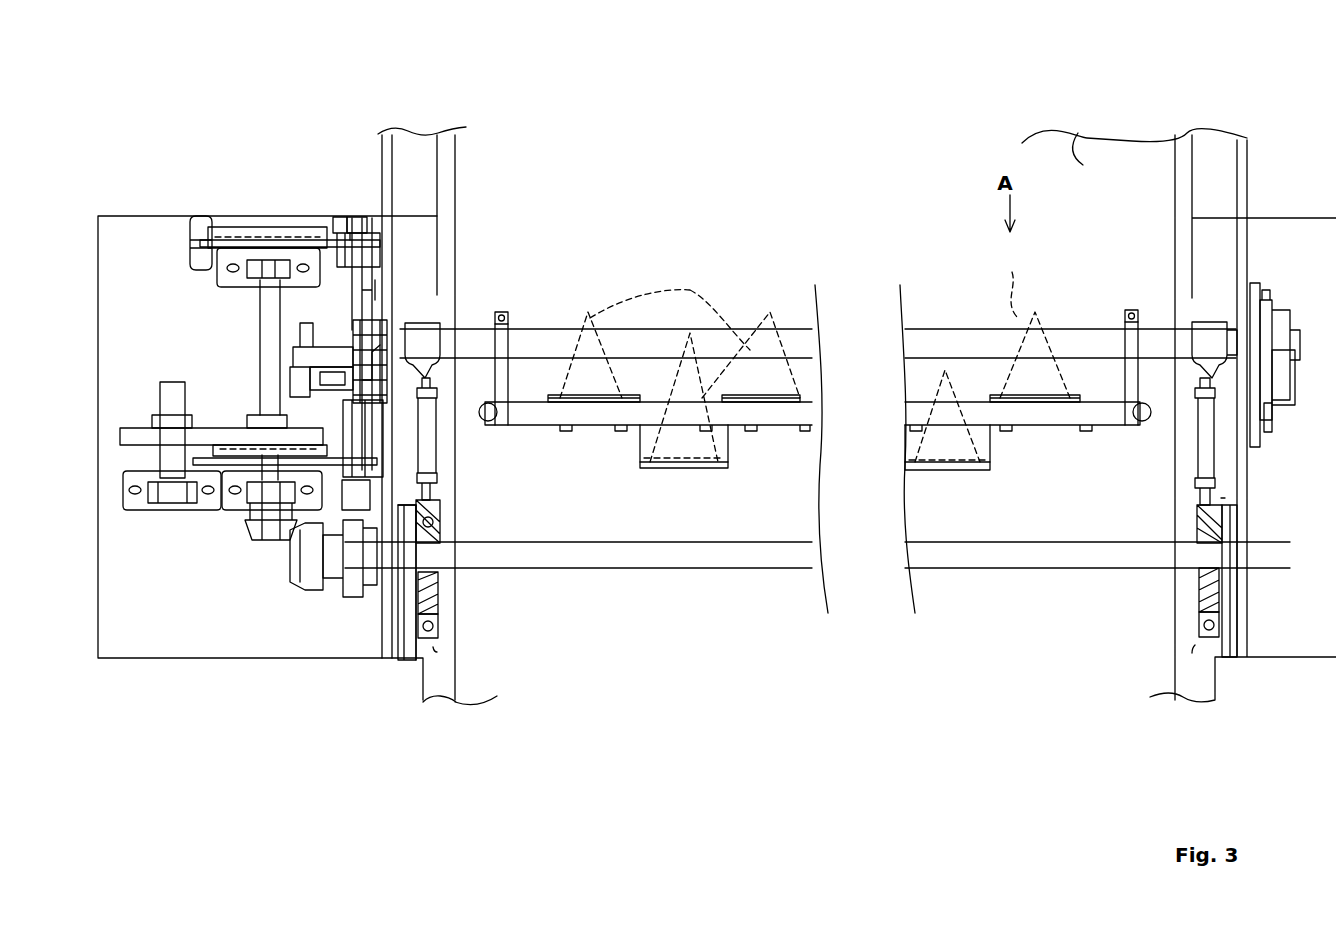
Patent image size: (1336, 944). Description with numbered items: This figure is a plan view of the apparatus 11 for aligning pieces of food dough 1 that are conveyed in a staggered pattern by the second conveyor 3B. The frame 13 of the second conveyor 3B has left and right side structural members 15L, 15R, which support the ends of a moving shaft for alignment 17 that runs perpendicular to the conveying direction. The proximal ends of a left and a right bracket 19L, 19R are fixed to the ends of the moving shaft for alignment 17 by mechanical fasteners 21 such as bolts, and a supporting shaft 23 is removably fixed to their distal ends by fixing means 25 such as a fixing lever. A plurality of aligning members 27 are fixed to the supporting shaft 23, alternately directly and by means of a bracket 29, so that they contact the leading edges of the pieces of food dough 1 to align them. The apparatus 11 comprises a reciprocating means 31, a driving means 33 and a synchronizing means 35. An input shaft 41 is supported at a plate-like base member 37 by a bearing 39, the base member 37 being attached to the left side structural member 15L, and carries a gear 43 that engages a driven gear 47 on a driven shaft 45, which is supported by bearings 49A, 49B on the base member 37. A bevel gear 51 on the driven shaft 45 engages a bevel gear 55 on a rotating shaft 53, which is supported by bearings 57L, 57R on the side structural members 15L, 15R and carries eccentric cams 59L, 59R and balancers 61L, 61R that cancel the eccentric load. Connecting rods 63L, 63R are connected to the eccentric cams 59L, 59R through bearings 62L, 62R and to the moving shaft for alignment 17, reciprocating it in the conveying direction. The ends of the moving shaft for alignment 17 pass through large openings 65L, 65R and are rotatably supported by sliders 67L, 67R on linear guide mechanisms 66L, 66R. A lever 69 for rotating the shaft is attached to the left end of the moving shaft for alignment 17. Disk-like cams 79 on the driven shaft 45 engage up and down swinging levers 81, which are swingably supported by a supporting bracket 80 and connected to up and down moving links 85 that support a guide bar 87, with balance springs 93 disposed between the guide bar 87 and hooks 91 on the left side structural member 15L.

The pieces of food dough 1 is at (690, 306).
The second conveyor 3B is at (1134, 132).
The apparatus for aligning the pieces of food dough 11 is at (756, 254).
The frame 13 is at (1258, 163).
The left side structural member 15L is at (382, 160).
The right side structural member 15R is at (1237, 187).
The moving shaft for alignment 17 is at (550, 328).
The left bracket 19L is at (512, 325).
The right bracket 19R is at (1128, 306).
The pin 21 is at (1123, 316).
The supporting shaft 23 is at (530, 425).
The fixing means 25 is at (1143, 421).
The aligning members 27 is at (674, 467).
The bracket 29 is at (1015, 465).
The reciprocating means 31 is at (342, 630).
The driving means 33 is at (350, 370).
The synchronizing means 35 is at (210, 560).
The base member 37 is at (201, 660).
The bearing 39 is at (143, 512).
The input shaft 41 is at (160, 405).
The gear 43 is at (120, 442).
The driven shaft 45 is at (260, 326).
The driven gear 47 is at (242, 427).
The bearing 49A is at (255, 512).
The bearing 49B is at (242, 282).
The bevel gear 51 is at (252, 542).
The rotating shaft 53 is at (668, 565).
The bevel gear 55 is at (295, 577).
The bearing 57L is at (385, 647).
The bearing 57R is at (1258, 625).
The eccentric cam 59L is at (438, 595).
The eccentric cam 59R is at (1193, 597).
The balancer 61L is at (440, 520).
The balancer 61R is at (1212, 535).
The bearing 62L is at (438, 630).
The bearing 62R is at (1193, 625).
The left connecting rod 63L is at (428, 450).
The right connecting rod 63R is at (1190, 470).
The large opening 65L is at (365, 285).
The large opening 65R is at (1250, 303).
The linear guide mechanisms 66L is at (363, 300).
The linear guide mechanisms 66R is at (1265, 306).
The slider 67L is at (355, 322).
The slider 67R is at (1310, 385).
The lever for rotating a shaft 69 is at (312, 375).
The disk-like cams 79 is at (210, 442).
The supporting bracket 80 is at (175, 505).
The up and down swinging levers 81 is at (247, 230).
The up and down moving links 85 is at (332, 230).
The guide bar 87 is at (355, 458).
The hooks 91 is at (382, 222).
The balance springs 93 is at (355, 217).